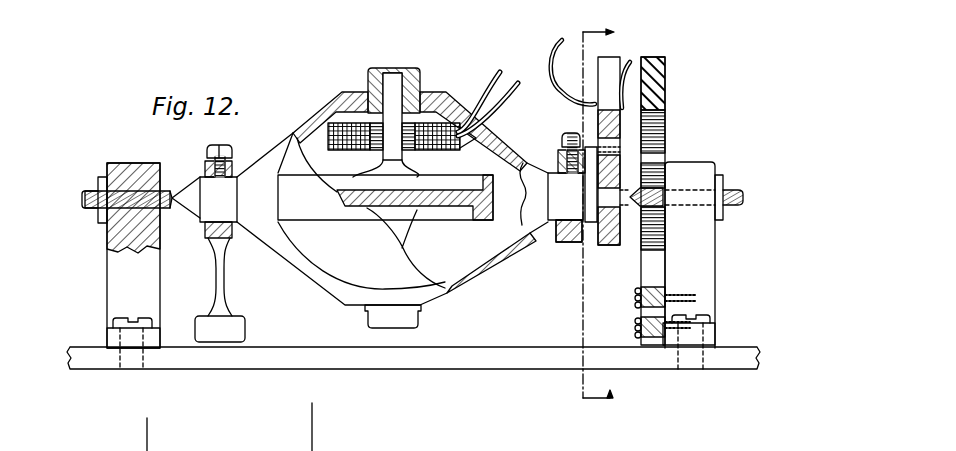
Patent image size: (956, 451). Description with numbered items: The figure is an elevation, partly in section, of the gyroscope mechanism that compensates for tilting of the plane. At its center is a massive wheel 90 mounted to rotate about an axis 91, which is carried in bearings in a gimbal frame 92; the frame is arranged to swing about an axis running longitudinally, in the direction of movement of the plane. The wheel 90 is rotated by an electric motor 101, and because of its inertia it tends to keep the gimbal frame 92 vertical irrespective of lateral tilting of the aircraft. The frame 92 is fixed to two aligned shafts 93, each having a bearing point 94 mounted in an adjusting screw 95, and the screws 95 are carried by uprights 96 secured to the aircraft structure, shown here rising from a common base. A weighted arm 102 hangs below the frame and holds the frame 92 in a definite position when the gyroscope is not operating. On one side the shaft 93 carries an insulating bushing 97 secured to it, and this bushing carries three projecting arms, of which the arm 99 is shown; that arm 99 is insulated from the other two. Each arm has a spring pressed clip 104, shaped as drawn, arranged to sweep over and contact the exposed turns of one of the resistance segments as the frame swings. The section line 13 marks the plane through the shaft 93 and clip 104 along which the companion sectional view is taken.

The section line 13 is at (608, 216).
The wheel 90 is at (484, 221).
The axis 91 is at (400, 150).
The gimbal frame 92 is at (450, 293).
The shafts 93 is at (213, 208).
The bearing points 94 is at (181, 190).
The adjusting screws 95 is at (90, 197).
The uprights 96 is at (123, 278).
The insulating bushing 97 is at (562, 244).
The arm 99 is at (606, 64).
The electric motor 101 is at (358, 150).
The weighted arm 102 is at (240, 331).
The spring pressed clip 104 is at (634, 52).